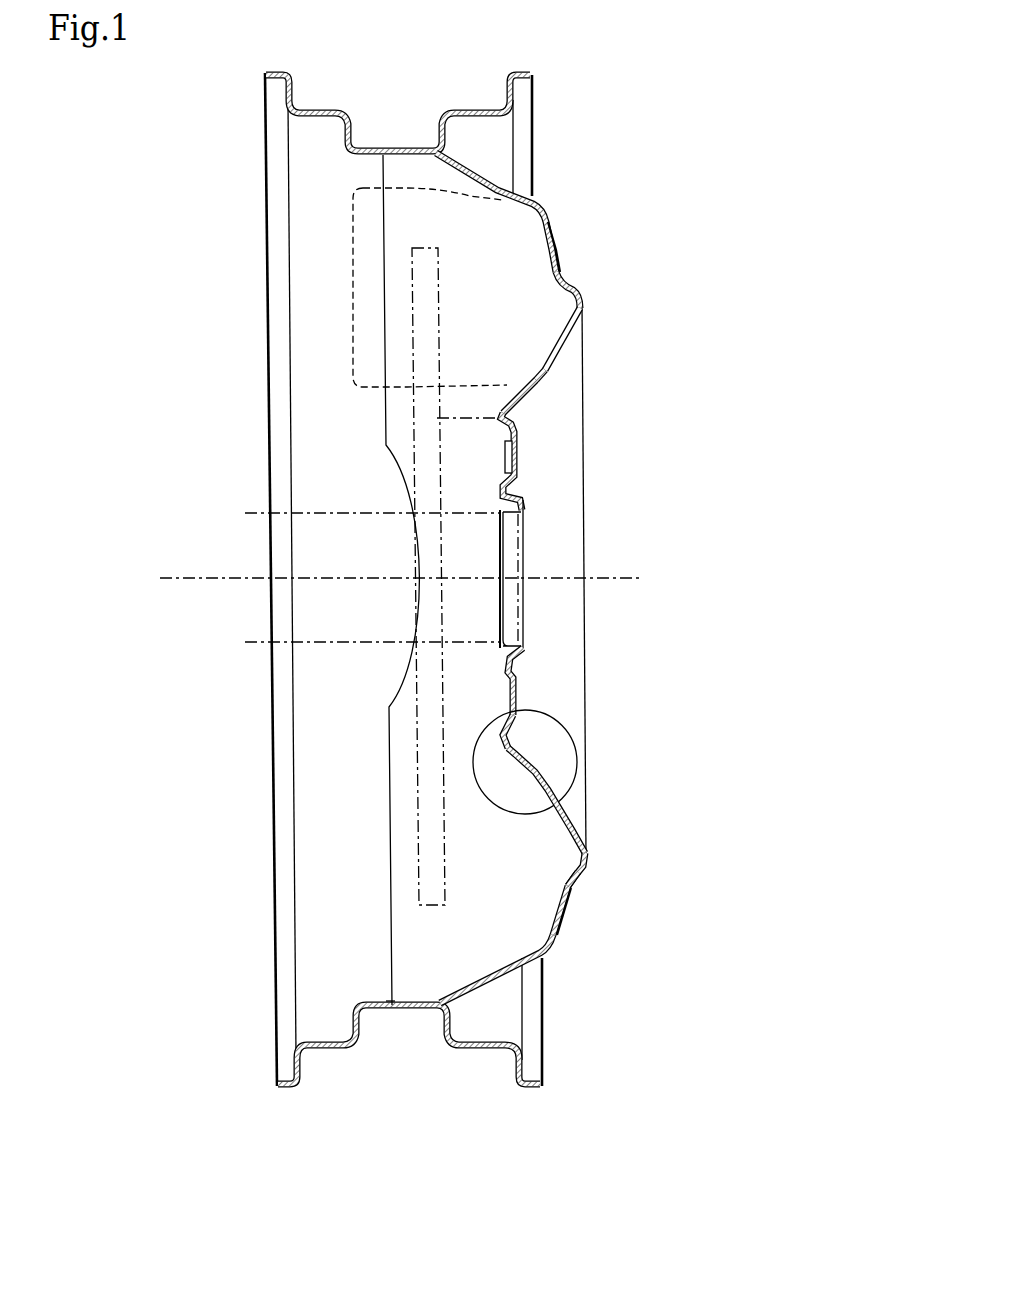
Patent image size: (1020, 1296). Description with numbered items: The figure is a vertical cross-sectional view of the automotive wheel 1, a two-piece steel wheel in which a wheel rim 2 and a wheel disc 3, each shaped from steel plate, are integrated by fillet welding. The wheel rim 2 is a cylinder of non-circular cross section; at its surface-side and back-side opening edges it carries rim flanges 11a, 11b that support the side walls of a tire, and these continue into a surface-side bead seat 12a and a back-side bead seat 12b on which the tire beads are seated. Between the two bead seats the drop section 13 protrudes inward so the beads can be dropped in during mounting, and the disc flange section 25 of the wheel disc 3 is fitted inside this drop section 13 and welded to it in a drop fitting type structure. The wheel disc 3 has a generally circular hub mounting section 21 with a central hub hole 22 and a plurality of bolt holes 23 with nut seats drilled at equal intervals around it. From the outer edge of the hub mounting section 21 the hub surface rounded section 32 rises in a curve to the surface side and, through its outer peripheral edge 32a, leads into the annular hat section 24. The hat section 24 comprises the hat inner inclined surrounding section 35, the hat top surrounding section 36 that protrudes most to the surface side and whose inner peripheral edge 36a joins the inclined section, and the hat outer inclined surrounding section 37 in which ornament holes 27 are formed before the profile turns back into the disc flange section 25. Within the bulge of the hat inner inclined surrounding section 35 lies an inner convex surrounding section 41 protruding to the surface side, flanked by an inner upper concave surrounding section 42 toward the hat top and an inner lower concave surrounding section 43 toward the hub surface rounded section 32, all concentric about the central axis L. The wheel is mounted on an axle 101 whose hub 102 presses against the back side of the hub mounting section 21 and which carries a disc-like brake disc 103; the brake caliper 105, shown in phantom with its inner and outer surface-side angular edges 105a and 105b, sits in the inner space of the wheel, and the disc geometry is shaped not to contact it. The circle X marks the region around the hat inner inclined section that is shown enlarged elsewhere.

The automotive wheel 1 is at (601, 117).
The wheel rim 2 is at (323, 112).
The wheel disc 3 is at (585, 870).
The rim flange 11a is at (533, 1087).
The rim flange 11b is at (282, 1087).
The surface-side bead seat 12a is at (492, 1050).
The back-side bead seat 12b is at (328, 1050).
The drop section 13 is at (412, 1012).
The hub mounting section 21 is at (513, 662).
The hub hole 22 is at (510, 602).
The bolt hole 23 is at (517, 463).
The hat section 24 is at (577, 287).
The disc flange section 25 is at (388, 998).
The ornament hole 27 is at (558, 245).
The hub surface rounded section 32 is at (507, 418).
The outer peripheral edge of hub surface rounded section 32a is at (510, 747).
The hat inner inclined surrounding section 35 is at (567, 810).
The hat top surrounding section 36 is at (588, 852).
The inner peripheral edge of hat top surrounding section 36a is at (570, 838).
The hat outer inclined surrounding section 37 is at (548, 952).
The inner convex surrounding section 41 is at (540, 375).
The inner upper concave surrounding section 42 is at (558, 345).
The inner lower concave surrounding section 43 is at (525, 398).
The axle 101 is at (328, 513).
The hub 102 is at (478, 736).
The brake disc 103 is at (413, 692).
The brake caliper 105 is at (467, 200).
The surface-side angular edge 105a is at (527, 380).
The surface-side angular edge 105b is at (530, 214).
The central axis L is at (160, 578).
The enlarged region X is at (573, 738).